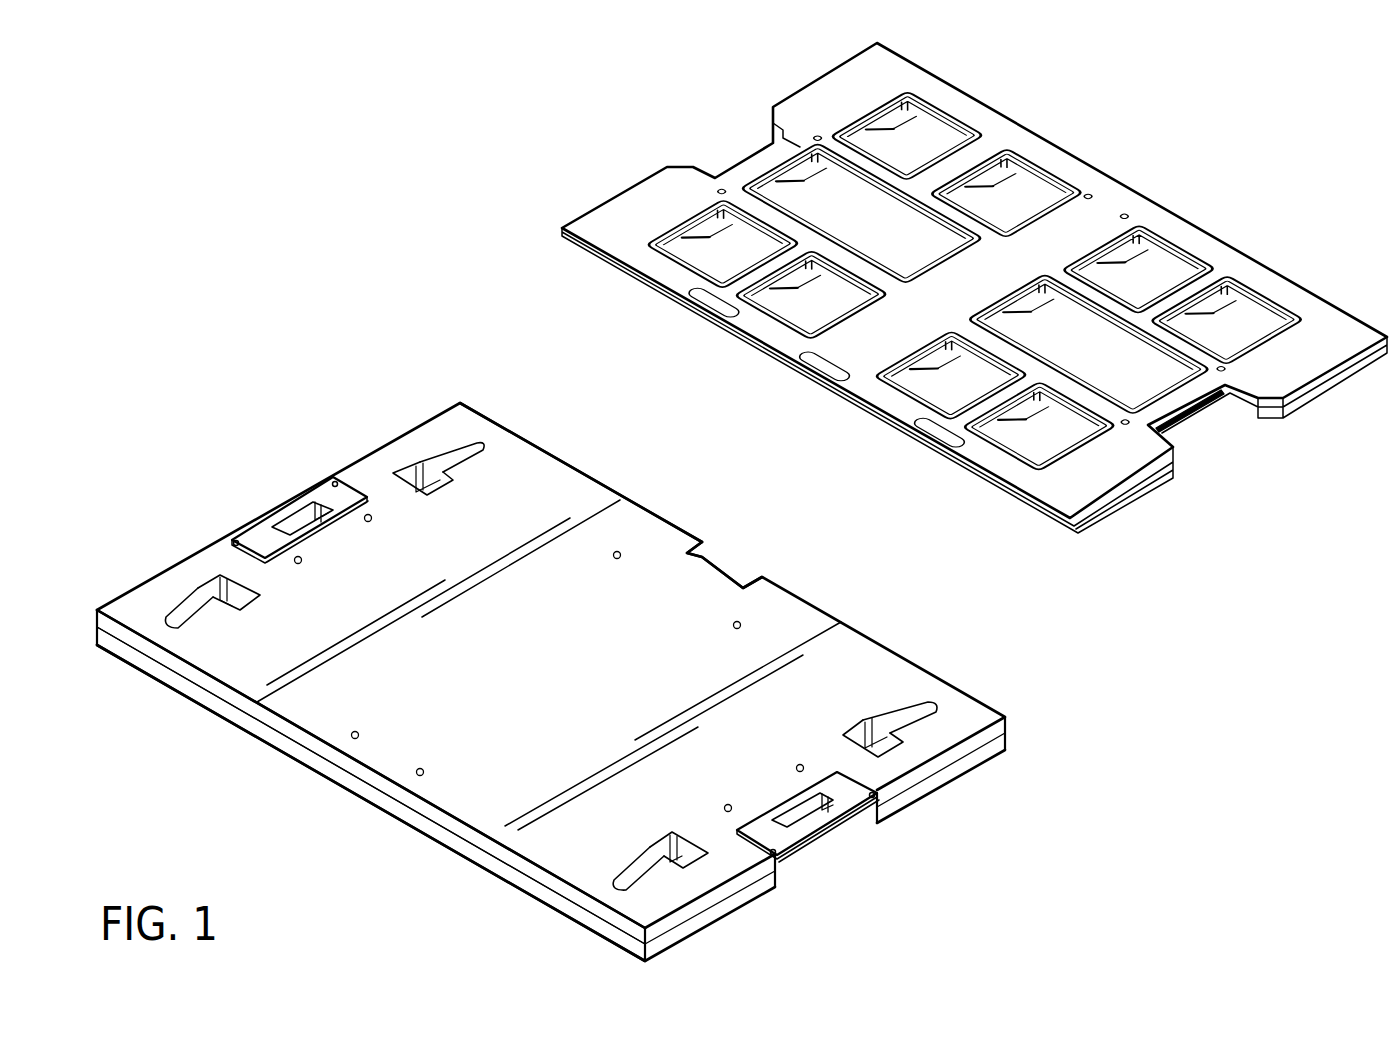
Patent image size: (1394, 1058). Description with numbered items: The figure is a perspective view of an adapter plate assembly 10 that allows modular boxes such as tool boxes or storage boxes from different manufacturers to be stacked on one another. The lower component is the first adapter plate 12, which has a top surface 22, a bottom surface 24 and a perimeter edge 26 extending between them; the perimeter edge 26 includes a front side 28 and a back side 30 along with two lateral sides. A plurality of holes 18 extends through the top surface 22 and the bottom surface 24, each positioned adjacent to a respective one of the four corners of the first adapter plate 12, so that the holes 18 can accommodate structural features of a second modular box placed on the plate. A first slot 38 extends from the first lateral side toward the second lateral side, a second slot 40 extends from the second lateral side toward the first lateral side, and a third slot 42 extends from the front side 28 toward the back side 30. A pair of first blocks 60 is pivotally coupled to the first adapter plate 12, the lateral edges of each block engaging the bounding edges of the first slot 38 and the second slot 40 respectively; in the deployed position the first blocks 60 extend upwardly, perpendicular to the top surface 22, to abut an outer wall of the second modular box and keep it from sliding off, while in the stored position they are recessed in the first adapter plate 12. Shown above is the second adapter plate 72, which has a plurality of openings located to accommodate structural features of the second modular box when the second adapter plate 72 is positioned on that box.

The adapter plate assembly 10 is at (418, 347).
The first adapter plate 12 is at (462, 403).
The holes 18 is at (408, 465).
The top surface 22 is at (530, 492).
The bottom surface 24 is at (380, 810).
The perimeter edge 26 is at (258, 742).
The front side 28 is at (658, 515).
The back side 30 is at (458, 830).
The first slot 38 is at (313, 518).
The second slot 40 is at (803, 792).
The third slot 42 is at (722, 570).
The first blocks 60 is at (262, 517).
The second adapter plate 72 is at (613, 196).